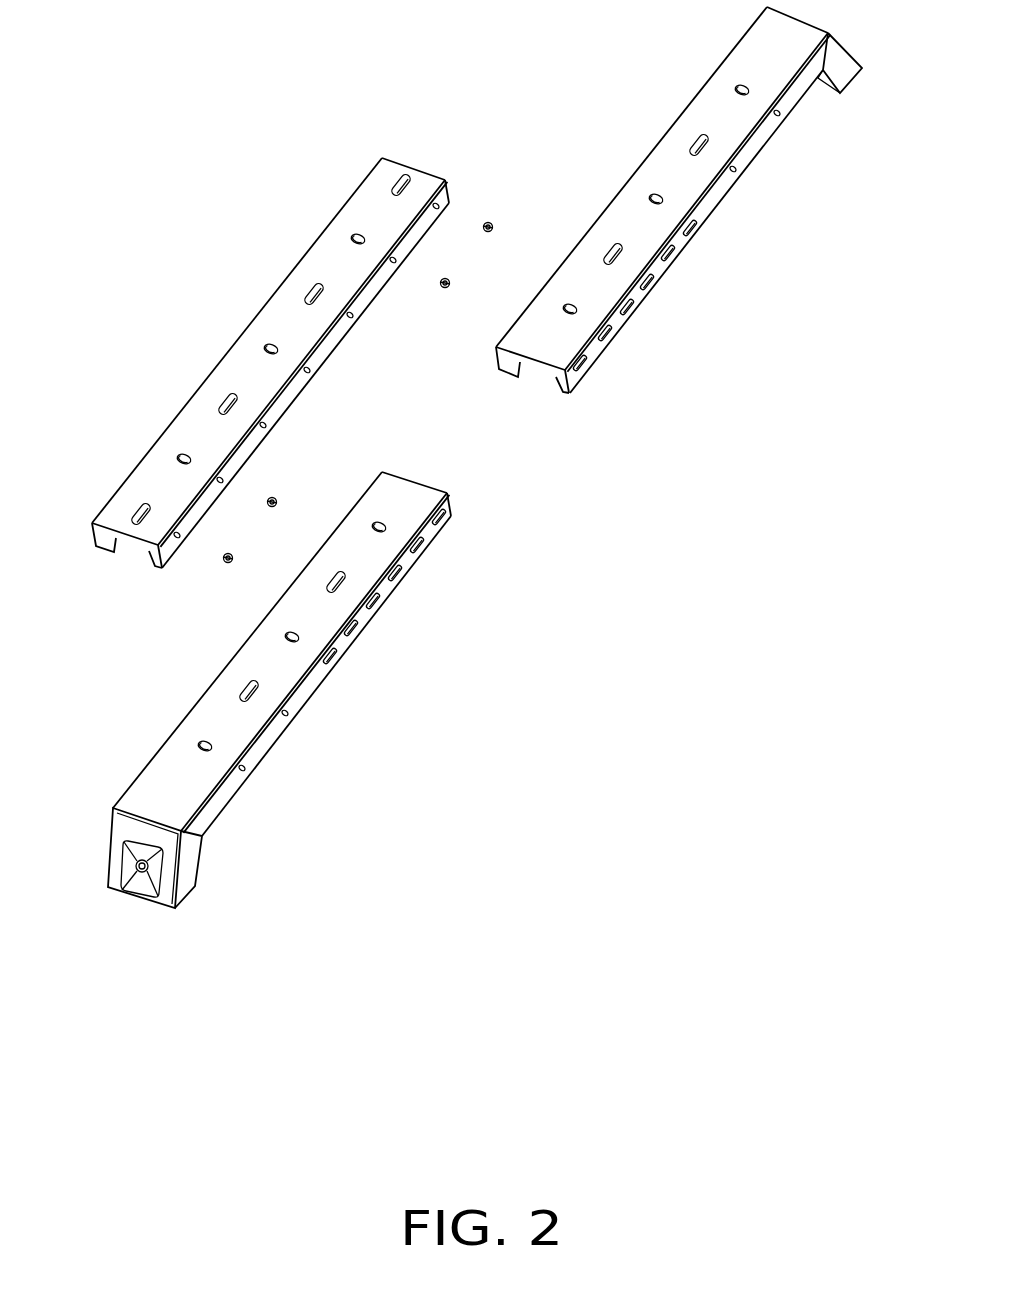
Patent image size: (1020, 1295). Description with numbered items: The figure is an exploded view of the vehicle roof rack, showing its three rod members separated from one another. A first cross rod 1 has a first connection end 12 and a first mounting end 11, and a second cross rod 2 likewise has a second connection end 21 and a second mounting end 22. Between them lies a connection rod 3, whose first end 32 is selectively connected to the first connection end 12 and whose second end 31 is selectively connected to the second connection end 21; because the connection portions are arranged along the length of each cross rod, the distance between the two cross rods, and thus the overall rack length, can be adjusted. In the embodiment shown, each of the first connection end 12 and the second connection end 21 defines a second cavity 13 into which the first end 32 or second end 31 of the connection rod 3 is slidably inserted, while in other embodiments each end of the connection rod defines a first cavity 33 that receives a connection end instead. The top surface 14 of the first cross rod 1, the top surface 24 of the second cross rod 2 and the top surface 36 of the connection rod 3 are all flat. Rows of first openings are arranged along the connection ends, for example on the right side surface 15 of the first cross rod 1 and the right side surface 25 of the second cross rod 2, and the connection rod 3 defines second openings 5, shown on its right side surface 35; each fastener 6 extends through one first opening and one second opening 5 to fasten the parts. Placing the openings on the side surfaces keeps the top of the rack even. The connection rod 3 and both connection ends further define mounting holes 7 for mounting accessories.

The first cross rod 1 is at (637, 261).
The first mounting end 11 is at (772, 50).
The first connection end 12 is at (543, 323).
The second cavity 13 is at (553, 380).
The top surface of first cross rod 14 is at (717, 123).
The right side surface of first cross rod 15 is at (760, 143).
The second cross rod 2 is at (310, 692).
The second connection end 21 is at (403, 508).
The second mounting end 22 is at (183, 793).
The top surface of second cross rod 24 is at (220, 712).
The right side surface of second cross rod 25 is at (300, 708).
The connection rod 3 is at (278, 331).
The second end 31 is at (142, 483).
The first end 32 is at (370, 193).
The first cavity 33 is at (430, 168).
The right side surface of connection rod 35 is at (328, 358).
The top surface of connection rod 36 is at (202, 437).
The second opening 5 is at (263, 430).
The fastener 6 is at (223, 563).
The mounting hole 7 is at (267, 347).